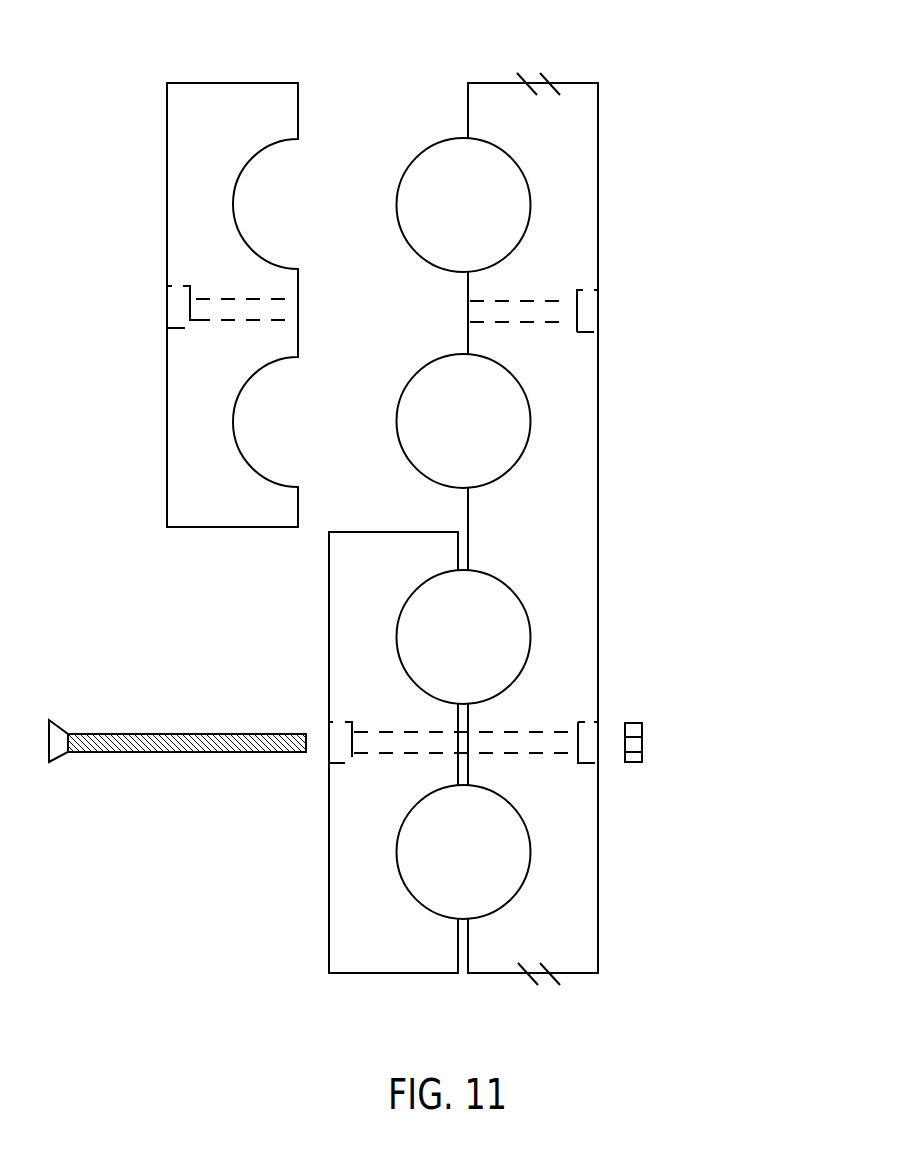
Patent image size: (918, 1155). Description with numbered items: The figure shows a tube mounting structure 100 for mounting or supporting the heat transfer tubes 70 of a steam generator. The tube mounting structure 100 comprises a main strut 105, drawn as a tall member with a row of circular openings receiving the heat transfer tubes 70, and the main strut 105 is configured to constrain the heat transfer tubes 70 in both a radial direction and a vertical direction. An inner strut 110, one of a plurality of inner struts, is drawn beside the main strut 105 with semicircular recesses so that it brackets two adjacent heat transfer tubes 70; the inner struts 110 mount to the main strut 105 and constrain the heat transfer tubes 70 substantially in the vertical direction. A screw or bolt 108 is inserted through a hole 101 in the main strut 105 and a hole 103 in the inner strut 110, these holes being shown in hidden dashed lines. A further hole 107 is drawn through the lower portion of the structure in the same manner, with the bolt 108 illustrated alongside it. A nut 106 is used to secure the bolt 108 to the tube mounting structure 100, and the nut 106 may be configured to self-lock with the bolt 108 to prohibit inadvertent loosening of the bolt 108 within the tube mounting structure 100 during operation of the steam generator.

The tube mounting structure 100 is at (690, 54).
The inner strut 110 is at (160, 138).
The hole 103 is at (238, 295).
The heat transfer tube 70 is at (417, 155).
The hole 101 is at (530, 295).
The main strut 105 is at (605, 475).
The fastener hole in lower blocks 107 is at (603, 725).
The nut 106 is at (652, 743).
The screw or bolt 108 is at (165, 720).